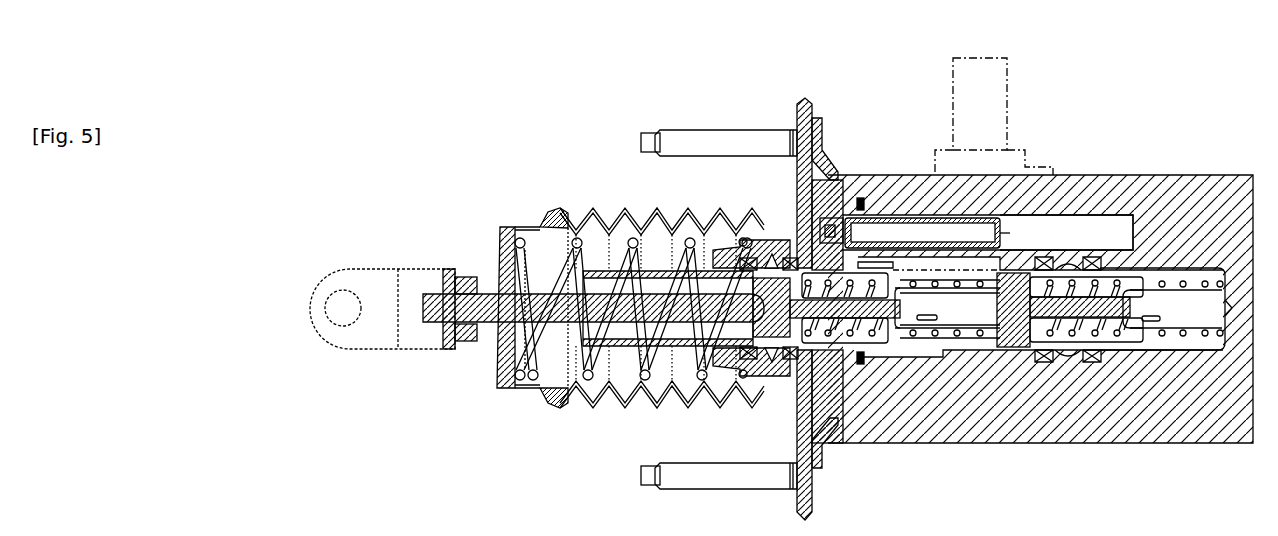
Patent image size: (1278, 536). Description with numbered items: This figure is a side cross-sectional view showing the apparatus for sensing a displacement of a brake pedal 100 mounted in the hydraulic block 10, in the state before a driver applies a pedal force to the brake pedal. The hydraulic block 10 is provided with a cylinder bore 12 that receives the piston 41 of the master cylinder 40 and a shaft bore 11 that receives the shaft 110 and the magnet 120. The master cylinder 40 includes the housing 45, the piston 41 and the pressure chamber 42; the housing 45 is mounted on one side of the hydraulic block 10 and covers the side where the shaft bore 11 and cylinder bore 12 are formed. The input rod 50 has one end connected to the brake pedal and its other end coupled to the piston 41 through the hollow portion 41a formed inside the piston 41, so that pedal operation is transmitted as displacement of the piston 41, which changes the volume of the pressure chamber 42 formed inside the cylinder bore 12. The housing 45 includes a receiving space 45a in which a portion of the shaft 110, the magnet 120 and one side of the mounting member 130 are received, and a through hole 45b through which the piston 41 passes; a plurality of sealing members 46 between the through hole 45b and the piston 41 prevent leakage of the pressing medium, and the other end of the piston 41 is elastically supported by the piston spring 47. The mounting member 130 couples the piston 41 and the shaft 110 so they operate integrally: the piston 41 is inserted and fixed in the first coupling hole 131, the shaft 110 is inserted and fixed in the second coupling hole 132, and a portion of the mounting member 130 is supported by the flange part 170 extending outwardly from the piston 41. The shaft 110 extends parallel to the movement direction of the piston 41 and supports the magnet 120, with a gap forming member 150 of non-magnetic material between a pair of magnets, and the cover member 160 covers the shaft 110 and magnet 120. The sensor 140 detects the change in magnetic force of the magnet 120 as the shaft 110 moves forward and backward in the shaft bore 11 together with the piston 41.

The hydraulic block 10 is at (1212, 188).
The shaft bore 11 is at (1093, 236).
The cylinder bore 12 is at (958, 276).
The master cylinder 40 is at (952, 358).
The piston 41 is at (740, 395).
The hollow portion 41a is at (620, 385).
The pressure chamber 42 is at (918, 345).
The housing 45 is at (790, 340).
The receiving space 45a is at (853, 212).
The through hole 45b is at (822, 256).
The sealing members 46 is at (752, 362).
The piston spring 47 is at (793, 370).
The input rod 50 is at (497, 333).
The apparatus for sensing a displacement of a brake pedal 100 is at (905, 340).
The shaft 110 is at (876, 232).
The magnet 120 is at (900, 222).
The mounting member 130 is at (817, 235).
The first coupling hole 131 is at (820, 352).
The second coupling hole 132 is at (818, 182).
The sensor 140 is at (1020, 148).
The gap forming member 150 is at (1005, 362).
The cover member 160 is at (1000, 233).
The flange part 170 is at (863, 257).